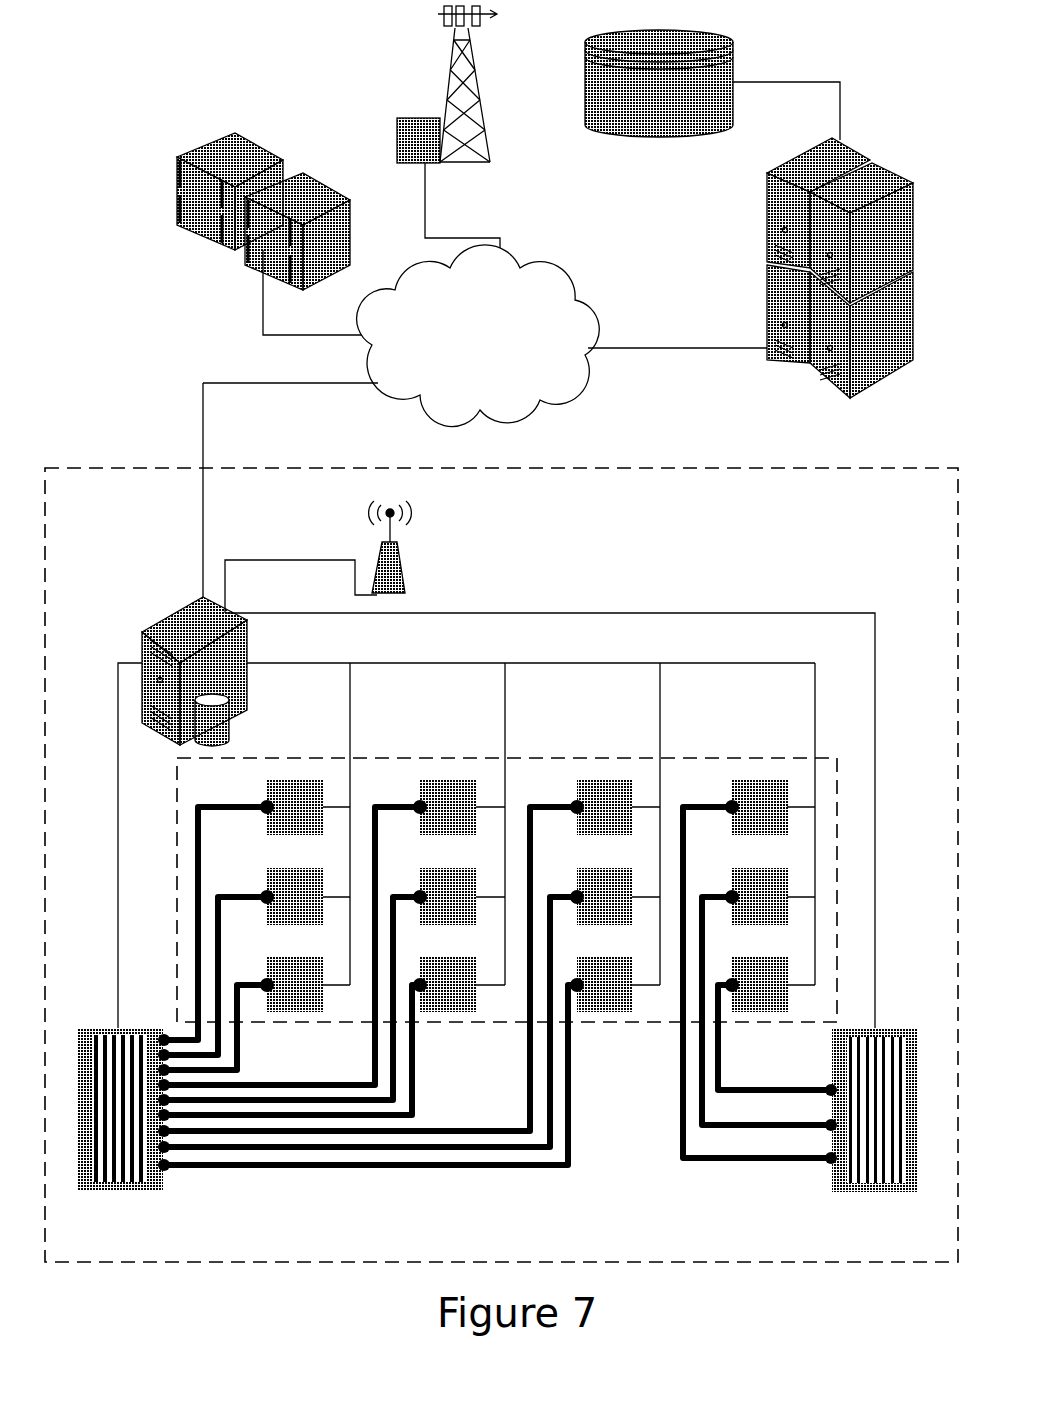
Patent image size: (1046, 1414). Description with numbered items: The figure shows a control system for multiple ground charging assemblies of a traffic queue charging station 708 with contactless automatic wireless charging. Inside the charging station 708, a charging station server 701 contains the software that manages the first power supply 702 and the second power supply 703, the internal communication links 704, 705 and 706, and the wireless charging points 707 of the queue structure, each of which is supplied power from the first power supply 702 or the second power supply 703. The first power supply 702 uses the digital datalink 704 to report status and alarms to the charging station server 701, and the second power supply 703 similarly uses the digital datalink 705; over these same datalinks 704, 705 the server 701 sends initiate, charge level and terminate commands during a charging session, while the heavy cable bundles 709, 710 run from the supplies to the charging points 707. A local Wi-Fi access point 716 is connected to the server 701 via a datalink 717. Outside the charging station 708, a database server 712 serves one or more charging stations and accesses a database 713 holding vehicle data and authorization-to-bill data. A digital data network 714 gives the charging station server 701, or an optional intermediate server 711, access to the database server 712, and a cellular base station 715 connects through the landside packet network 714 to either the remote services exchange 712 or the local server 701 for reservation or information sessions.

The charging station server 701 is at (193, 663).
The first power supply 702 is at (120, 1123).
The second power supply 703 is at (874, 1124).
The digital datalink 704 is at (137, 863).
The digital datalink 705 is at (858, 705).
The internal communication link 706 is at (302, 680).
The wireless charging points 707 is at (577, 740).
The charging station 708 is at (501, 822).
The cable bundle to first connector 709 is at (322, 1193).
The cable bundle to second connector 710 is at (658, 1138).
The intermediate server 711 is at (251, 234).
The database server 712 is at (849, 268).
The database 713 is at (691, 85).
The digital data network 714 is at (562, 336).
The base station 715 is at (448, 137).
The Wi-Fi access point 716 is at (404, 547).
The datalink 717 is at (272, 578).